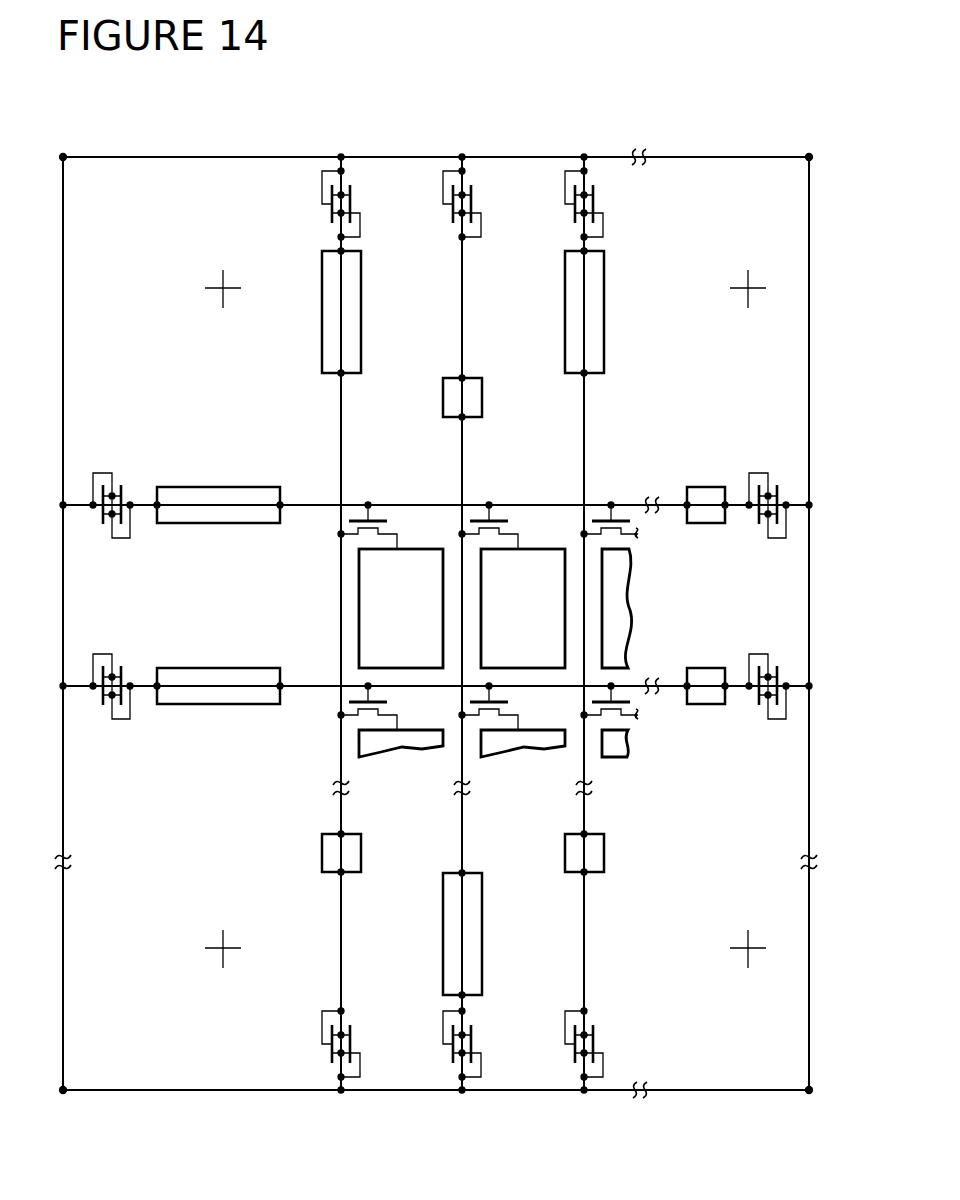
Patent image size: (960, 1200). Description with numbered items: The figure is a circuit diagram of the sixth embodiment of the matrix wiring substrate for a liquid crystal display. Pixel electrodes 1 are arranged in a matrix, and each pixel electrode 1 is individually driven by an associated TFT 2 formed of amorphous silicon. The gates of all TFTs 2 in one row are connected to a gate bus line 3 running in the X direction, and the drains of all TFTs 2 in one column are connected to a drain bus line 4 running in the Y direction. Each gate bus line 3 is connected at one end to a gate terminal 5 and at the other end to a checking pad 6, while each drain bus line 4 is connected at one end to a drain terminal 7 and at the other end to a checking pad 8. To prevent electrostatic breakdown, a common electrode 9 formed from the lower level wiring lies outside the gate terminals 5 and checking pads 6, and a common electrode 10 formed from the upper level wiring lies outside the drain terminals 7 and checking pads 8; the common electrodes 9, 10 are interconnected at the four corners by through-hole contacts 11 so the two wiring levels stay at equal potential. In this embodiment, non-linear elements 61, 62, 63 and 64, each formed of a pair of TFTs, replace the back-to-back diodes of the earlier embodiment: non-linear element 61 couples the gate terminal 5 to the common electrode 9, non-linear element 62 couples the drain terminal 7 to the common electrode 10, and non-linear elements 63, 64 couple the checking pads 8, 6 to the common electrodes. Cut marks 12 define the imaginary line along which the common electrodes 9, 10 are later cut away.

The pixel electrode 1 is at (359, 608).
The TFT 2 is at (488, 503).
The gate bus line 3 is at (298, 505).
The drain bus line 4 is at (341, 405).
The gate terminal 5 is at (175, 487).
The checking pad 6 is at (706, 487).
The drain terminal 7 is at (322, 315).
The checking pad 8 is at (470, 378).
The common electrode 9 is at (63, 605).
The common electrode 10 is at (178, 157).
The through-hole contact 11 is at (63, 157).
The cut mark 12 is at (215, 285).
The non-linear element 61 is at (104, 538).
The non-linear element 62 is at (361, 209).
The non-linear element 63 is at (482, 209).
The non-linear element 64 is at (768, 540).